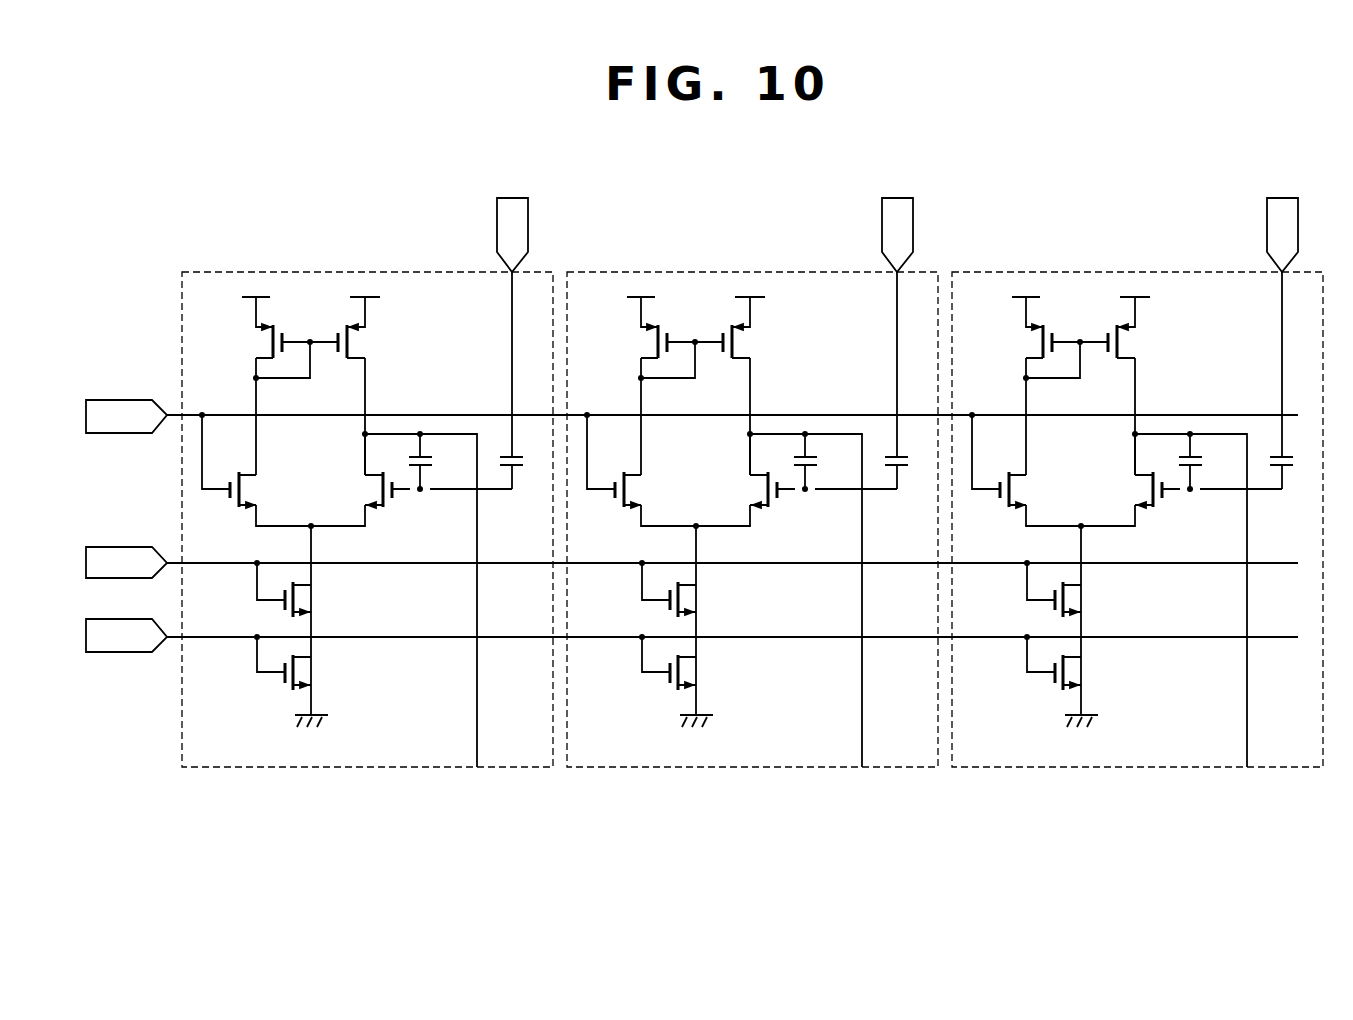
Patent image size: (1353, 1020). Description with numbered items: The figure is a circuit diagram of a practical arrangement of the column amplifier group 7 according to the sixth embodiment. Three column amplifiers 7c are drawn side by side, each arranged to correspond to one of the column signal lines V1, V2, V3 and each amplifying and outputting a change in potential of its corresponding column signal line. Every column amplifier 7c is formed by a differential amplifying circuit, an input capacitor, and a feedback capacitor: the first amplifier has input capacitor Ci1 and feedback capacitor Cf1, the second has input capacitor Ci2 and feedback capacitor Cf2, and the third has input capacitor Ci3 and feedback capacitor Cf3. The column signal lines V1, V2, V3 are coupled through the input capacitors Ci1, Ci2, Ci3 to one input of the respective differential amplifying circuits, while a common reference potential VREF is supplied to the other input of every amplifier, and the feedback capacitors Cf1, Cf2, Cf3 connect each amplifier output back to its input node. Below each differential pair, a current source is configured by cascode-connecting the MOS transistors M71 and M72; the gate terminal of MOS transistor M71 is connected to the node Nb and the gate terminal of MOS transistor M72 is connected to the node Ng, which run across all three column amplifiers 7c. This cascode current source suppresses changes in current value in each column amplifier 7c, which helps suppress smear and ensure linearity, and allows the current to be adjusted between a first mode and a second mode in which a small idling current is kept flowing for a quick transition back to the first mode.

The column amplifier group 7 is at (367, 152).
The column amplifier 7c is at (752, 491).
The MOS transistor M72 is at (302, 608).
The MOS transistor M71 is at (302, 662).
The feedback capacitor Cf1 is at (438, 461).
The feedback capacitor Cf2 is at (823, 461).
The feedback capacitor Cf3 is at (1208, 461).
The input capacitor Ci1 is at (524, 385).
The input capacitor Ci2 is at (909, 385).
The input capacitor Ci3 is at (1294, 385).
The column signal line V1 is at (512, 235).
The column signal line V2 is at (897, 235).
The column signal line V3 is at (1282, 235).
The reference voltage VREF is at (126, 416).
The node Ng is at (126, 562).
The node Nb is at (126, 635).